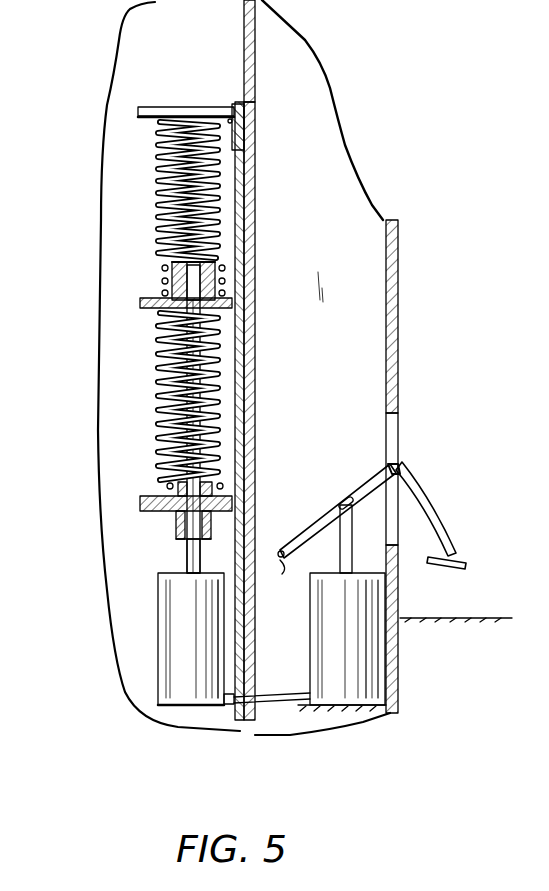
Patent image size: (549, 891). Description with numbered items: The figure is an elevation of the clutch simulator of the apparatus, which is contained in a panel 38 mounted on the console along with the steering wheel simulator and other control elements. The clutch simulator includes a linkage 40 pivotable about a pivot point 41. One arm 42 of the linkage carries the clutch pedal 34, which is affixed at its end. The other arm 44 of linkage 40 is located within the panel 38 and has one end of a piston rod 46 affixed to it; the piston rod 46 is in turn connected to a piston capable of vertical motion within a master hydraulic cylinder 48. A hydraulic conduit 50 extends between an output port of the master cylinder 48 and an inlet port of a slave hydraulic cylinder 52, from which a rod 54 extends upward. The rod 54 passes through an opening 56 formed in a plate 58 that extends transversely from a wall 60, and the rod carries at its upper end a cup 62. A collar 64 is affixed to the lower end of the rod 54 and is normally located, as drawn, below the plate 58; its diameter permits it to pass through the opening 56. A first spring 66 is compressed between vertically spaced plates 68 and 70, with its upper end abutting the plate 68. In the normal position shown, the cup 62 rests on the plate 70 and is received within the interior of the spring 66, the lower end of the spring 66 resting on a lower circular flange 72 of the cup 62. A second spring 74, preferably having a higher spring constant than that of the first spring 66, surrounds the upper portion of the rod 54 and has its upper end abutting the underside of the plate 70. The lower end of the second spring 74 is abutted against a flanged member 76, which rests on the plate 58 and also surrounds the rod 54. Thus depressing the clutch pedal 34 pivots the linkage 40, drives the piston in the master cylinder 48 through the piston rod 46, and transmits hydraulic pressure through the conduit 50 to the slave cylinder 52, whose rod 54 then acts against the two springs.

The clutch pedal 34 is at (468, 566).
The panel 38 is at (398, 345).
The linkage 40 is at (376, 532).
The pivot point 41 is at (282, 576).
The arm 42 is at (438, 535).
The other arm 44 is at (300, 538).
The piston rod 46 is at (362, 539).
The master hydraulic cylinder 48 is at (370, 683).
The hydraulic conduit 50 is at (280, 712).
The slave hydraulic cylinder 52 is at (170, 665).
The rod 54 is at (222, 436).
The opening 56 is at (208, 530).
The plate 58 is at (160, 505).
The wall 60 is at (241, 362).
The cup 62 is at (168, 283).
The collar 64 is at (186, 552).
The first spring 66 is at (226, 190).
The plate 68 is at (143, 107).
The plate 70 is at (142, 306).
The lower circular flange 72 is at (228, 292).
The second spring 74 is at (163, 424).
The flanged member 76 is at (140, 502).